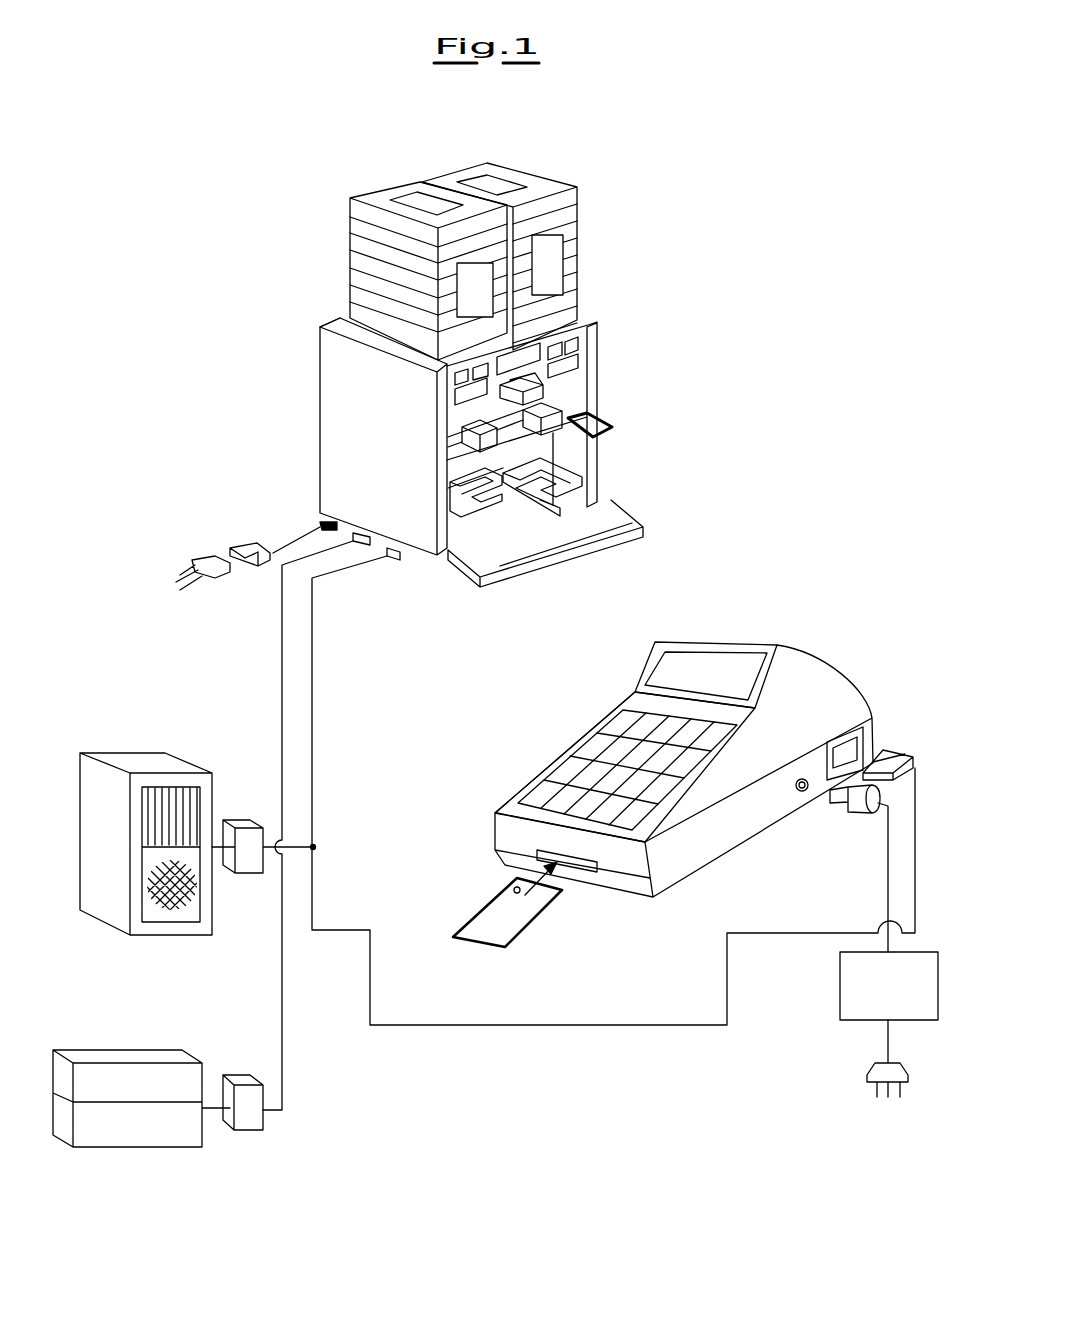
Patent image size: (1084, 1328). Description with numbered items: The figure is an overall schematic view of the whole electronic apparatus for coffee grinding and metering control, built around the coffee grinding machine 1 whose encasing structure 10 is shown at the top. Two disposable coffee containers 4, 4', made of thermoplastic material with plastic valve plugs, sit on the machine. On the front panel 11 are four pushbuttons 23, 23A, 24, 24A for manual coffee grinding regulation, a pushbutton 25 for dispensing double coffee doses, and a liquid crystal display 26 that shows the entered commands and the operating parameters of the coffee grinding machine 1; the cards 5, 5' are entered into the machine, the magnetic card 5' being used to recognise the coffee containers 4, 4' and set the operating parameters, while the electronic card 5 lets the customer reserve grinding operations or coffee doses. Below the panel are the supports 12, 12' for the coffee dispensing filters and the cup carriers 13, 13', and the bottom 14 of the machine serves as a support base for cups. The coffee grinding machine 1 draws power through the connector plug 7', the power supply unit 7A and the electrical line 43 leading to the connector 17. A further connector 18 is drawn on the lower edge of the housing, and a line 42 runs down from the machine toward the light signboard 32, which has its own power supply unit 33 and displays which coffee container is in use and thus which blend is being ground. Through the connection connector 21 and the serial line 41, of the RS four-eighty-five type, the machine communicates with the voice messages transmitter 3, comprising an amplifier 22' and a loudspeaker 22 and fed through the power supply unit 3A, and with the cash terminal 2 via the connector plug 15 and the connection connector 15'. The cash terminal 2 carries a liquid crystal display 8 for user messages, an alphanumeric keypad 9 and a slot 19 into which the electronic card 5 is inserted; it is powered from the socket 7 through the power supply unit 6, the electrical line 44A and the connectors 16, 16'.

The coffee grinding machine 1 is at (338, 437).
The cash terminal 2 is at (680, 622).
The voice messages transmitter 3 is at (143, 728).
The power supply unit 3A is at (247, 843).
The disposable coffee container 4 is at (395, 271).
The disposable coffee container 4' is at (506, 239).
The electronic card 5 is at (507, 904).
The magnetic card 5' is at (625, 429).
The power supply unit 6 is at (853, 982).
The socket 7 is at (861, 1080).
The connector plug 7' is at (179, 561).
The power supply unit 7A is at (257, 563).
The liquid crystal display 8 is at (673, 670).
The alphanumeric keypad 9 is at (613, 753).
The encasing structure 10 is at (612, 205).
The front panel 11 is at (580, 382).
The support for coffee dispensing filter 12 is at (471, 427).
The support for coffee dispensing filter 12' is at (594, 395).
The cup carrier 13 is at (433, 492).
The cup carrier 13' is at (588, 487).
The bottom 14 is at (567, 540).
The connector plug 15 is at (895, 734).
The connection connector 15' is at (868, 714).
The connector 16 is at (855, 823).
The connector 16' is at (786, 818).
The connector 17 is at (320, 522).
The connector socket 18 is at (367, 540).
The slot 19 is at (586, 873).
The connection connector 21 is at (395, 558).
The loudspeaker 22 is at (170, 913).
The amplifier 22' is at (182, 771).
The pushbutton 23 is at (453, 378).
The pushbutton 23A is at (390, 333).
The pushbutton 24 is at (553, 352).
The pushbutton 24A is at (573, 350).
The pushbutton 25 is at (467, 396).
The liquid crystal display 26 is at (517, 355).
The light signboard 32 is at (157, 1137).
The power supply unit 33 is at (253, 1123).
The serial line 41 is at (370, 945).
The cable 42 is at (282, 665).
The electrical line 43 is at (273, 542).
The electrical line 44A is at (888, 885).